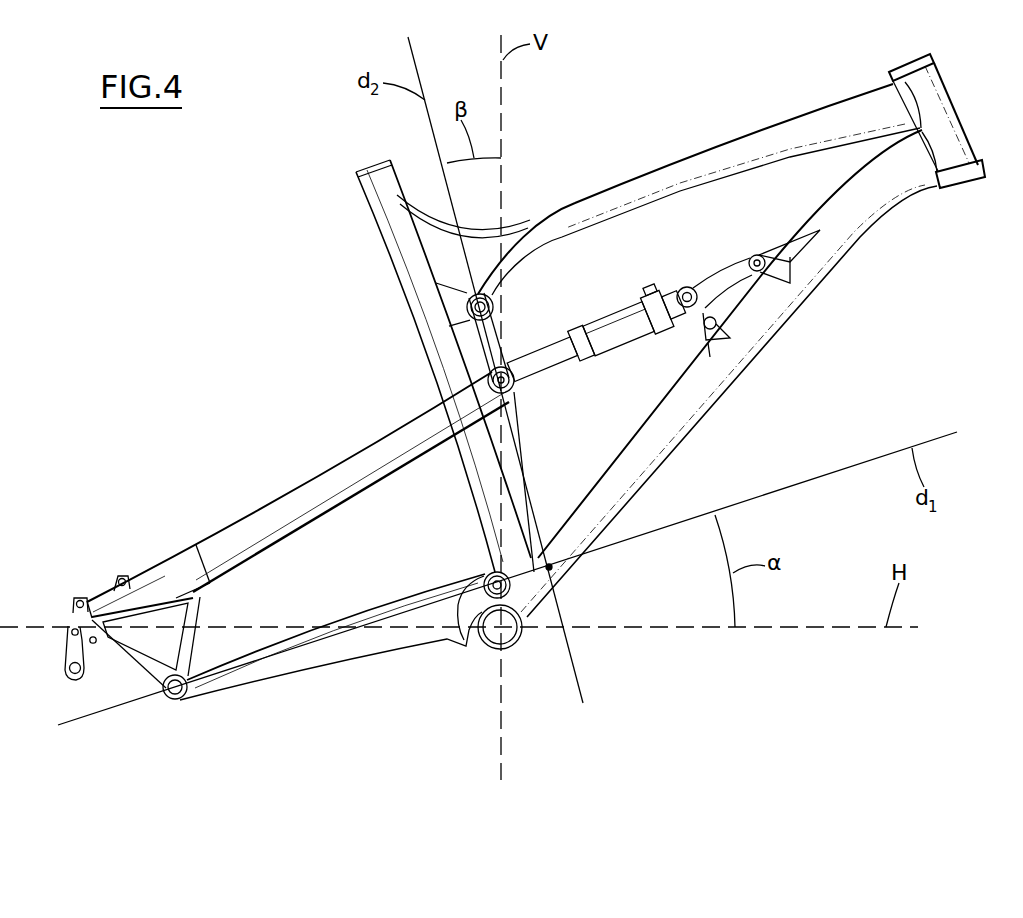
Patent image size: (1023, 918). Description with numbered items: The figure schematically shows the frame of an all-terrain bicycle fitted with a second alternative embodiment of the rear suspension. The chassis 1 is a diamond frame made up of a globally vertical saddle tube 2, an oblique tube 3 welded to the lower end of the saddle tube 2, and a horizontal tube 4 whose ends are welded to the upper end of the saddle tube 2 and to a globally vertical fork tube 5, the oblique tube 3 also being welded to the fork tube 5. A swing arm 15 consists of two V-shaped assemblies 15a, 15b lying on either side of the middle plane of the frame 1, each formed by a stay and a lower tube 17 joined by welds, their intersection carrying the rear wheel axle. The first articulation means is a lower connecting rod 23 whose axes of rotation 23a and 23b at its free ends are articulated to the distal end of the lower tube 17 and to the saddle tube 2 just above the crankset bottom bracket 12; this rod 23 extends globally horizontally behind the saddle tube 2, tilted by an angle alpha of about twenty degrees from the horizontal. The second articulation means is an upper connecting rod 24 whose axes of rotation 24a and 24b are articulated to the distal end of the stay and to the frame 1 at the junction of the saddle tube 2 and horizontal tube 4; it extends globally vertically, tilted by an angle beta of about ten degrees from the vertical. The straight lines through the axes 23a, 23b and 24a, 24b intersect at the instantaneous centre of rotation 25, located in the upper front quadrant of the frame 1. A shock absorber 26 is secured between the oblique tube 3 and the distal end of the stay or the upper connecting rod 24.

The chassis 1 is at (679, 321).
The saddle tube 2 is at (424, 350).
The oblique tube 3 is at (690, 432).
The horizontal tube 4 is at (712, 150).
The fork tube 5 is at (961, 127).
The crankset bottom bracket 12 is at (494, 637).
The swing arm 15 is at (291, 492).
The V-shaped assembly 15a is at (228, 545).
The V-shaped assembly 15b is at (211, 527).
The lower tube 17 is at (145, 676).
The lower connecting rod 23 is at (362, 652).
The axis of rotation 23a is at (181, 699).
The axis of rotation 23b is at (510, 592).
The upper connecting rod 24 is at (500, 336).
The axis of rotation 24a is at (508, 395).
The axis of rotation 24b is at (530, 221).
The instantaneous centre of rotation 25 is at (552, 568).
The shock absorber 26 is at (639, 333).